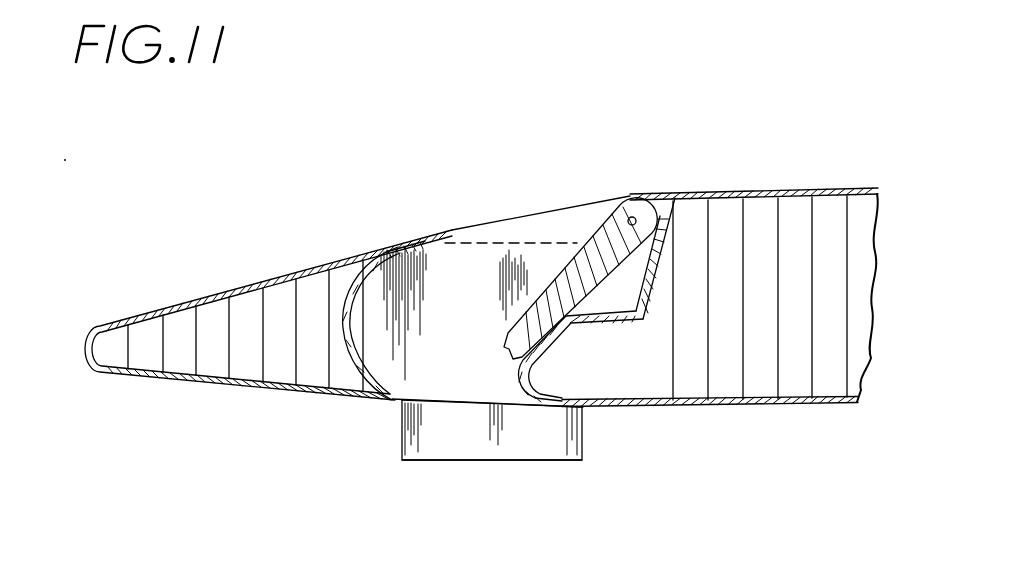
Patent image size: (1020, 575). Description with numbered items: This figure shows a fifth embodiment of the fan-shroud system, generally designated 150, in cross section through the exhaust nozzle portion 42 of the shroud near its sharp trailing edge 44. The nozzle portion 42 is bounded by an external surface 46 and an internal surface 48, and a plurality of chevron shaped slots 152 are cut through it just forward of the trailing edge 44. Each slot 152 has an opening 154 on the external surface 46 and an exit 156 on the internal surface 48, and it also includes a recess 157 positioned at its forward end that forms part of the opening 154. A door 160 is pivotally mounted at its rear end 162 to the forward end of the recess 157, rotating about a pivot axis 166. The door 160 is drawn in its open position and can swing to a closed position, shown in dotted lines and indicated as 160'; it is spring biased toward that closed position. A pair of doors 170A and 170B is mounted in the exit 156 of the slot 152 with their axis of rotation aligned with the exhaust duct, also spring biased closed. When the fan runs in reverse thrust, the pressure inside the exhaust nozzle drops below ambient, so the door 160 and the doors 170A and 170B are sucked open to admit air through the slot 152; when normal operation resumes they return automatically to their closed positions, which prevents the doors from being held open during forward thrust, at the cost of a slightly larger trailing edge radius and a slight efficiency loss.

The exhaust nozzle portion 42 is at (777, 190).
The trailing edge 44 is at (86, 346).
The external surface 46 is at (828, 189).
The internal surface 48 is at (760, 406).
The system 150 is at (573, 94).
The chevron shaped slot 152 is at (370, 304).
The opening 154 is at (486, 202).
The exit 156 is at (466, 403).
The recess 157 is at (612, 298).
The door 160 is at (539, 278).
The door in closed position 160' is at (517, 186).
The rear end of door 162 is at (628, 197).
The pivot axis 166 is at (648, 196).
The door 170A is at (396, 438).
The door 170B is at (400, 458).